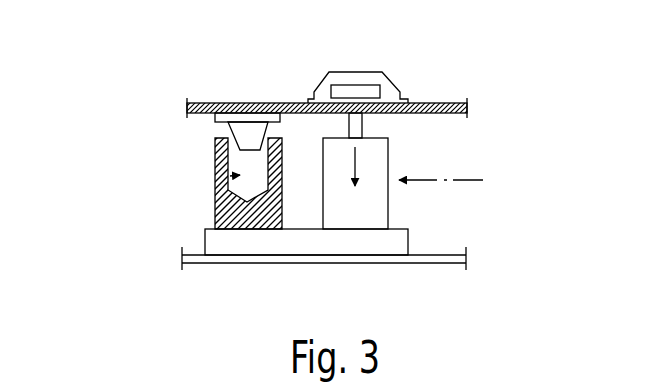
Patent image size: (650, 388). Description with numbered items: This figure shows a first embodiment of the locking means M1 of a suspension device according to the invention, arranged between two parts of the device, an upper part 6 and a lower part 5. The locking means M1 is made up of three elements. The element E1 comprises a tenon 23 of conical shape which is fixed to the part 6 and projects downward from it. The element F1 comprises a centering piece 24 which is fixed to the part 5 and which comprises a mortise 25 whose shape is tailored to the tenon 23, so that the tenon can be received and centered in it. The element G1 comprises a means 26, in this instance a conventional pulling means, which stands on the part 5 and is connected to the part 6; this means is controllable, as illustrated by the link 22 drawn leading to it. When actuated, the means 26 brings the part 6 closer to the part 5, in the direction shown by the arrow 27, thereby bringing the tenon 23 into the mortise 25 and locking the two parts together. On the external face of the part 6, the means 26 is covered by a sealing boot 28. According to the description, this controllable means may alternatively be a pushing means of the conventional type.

The part 5 is at (443, 263).
The part 6 is at (452, 103).
The link 22 is at (465, 180).
The tenon 23 is at (228, 128).
The centering piece 24 is at (215, 213).
The mortise 25 is at (230, 176).
The means 26 is at (388, 210).
The arrow 27 is at (356, 165).
The sealing boot 28 is at (365, 72).
The locking means M1 is at (179, 70).
The element E1 is at (245, 98).
The element F1 is at (120, 163).
The element G1 is at (372, 244).